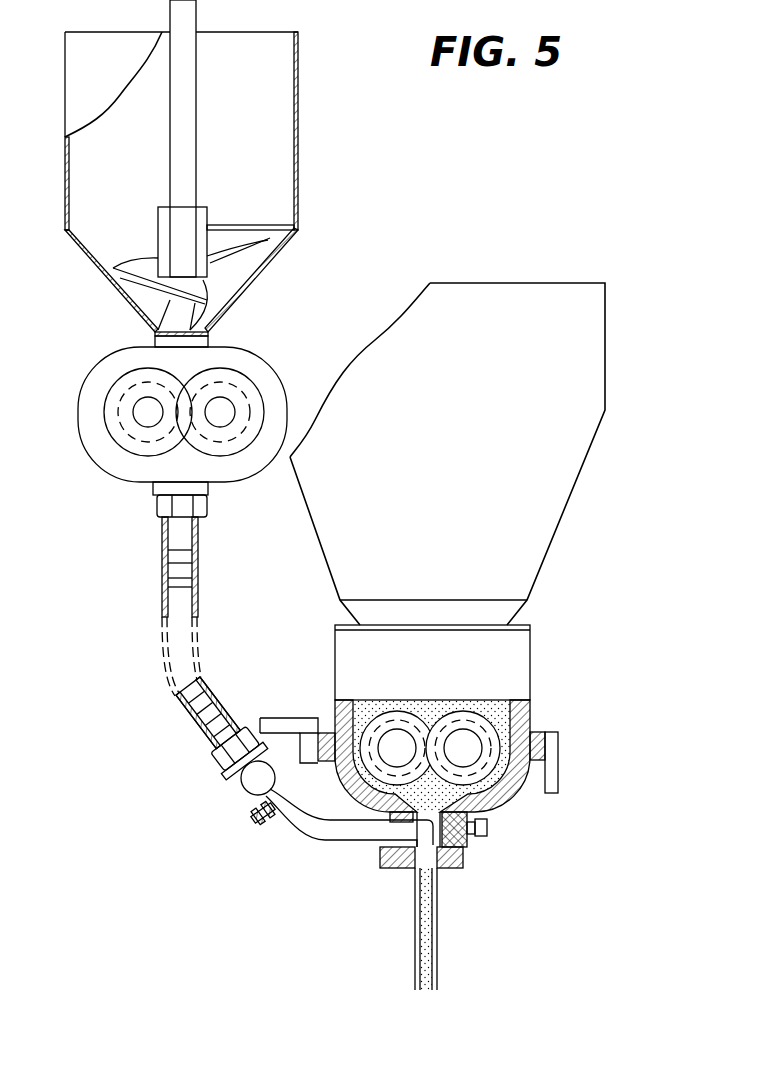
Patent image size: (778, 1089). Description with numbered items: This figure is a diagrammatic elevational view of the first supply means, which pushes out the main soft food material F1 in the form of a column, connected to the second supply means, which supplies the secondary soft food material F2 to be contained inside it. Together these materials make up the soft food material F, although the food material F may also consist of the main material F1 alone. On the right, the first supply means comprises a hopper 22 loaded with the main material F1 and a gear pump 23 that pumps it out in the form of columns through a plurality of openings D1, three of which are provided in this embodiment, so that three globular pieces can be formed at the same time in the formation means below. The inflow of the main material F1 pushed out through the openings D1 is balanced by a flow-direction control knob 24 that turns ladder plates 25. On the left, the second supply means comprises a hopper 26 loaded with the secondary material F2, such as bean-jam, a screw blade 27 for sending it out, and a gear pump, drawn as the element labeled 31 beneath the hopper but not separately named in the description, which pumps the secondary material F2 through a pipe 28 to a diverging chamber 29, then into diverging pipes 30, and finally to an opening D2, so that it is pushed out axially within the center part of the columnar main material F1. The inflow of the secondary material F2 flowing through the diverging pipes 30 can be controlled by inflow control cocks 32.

The hopper 22 is at (562, 482).
The gear pump 23 is at (458, 717).
The flow-direction control knob 24 is at (487, 828).
The ladder plates 25 is at (477, 808).
The hopper 26 is at (282, 72).
The screw blade 27 is at (247, 235).
The pipe 28 is at (160, 597).
The diverging chamber 29 is at (242, 785).
The diverging pipes 30 is at (340, 835).
The roller feeder housing 31 is at (240, 390).
The inflow control cocks 32 is at (258, 826).
The openings D1 is at (438, 870).
The opening D2 is at (428, 862).
The soft food material F is at (460, 929).
The main soft food material F1 is at (437, 920).
The secondary soft food material F2 is at (476, 918).